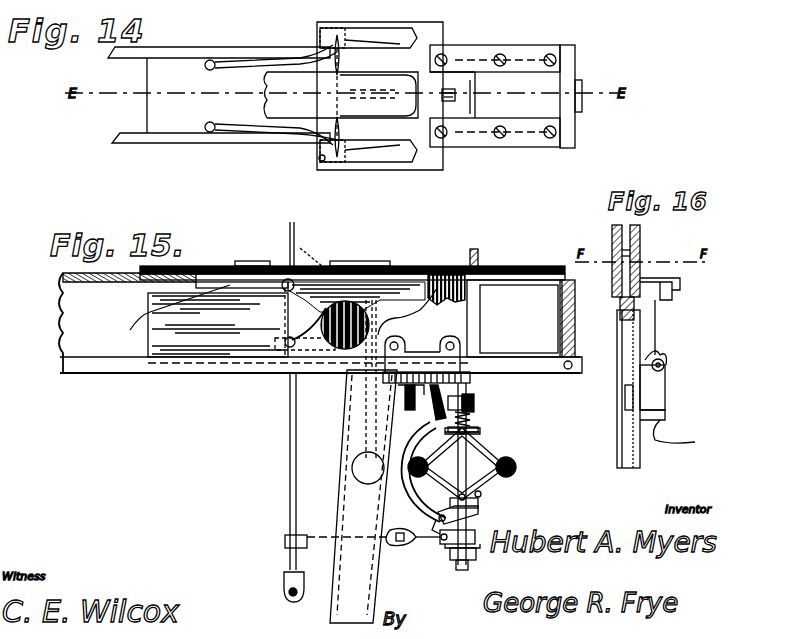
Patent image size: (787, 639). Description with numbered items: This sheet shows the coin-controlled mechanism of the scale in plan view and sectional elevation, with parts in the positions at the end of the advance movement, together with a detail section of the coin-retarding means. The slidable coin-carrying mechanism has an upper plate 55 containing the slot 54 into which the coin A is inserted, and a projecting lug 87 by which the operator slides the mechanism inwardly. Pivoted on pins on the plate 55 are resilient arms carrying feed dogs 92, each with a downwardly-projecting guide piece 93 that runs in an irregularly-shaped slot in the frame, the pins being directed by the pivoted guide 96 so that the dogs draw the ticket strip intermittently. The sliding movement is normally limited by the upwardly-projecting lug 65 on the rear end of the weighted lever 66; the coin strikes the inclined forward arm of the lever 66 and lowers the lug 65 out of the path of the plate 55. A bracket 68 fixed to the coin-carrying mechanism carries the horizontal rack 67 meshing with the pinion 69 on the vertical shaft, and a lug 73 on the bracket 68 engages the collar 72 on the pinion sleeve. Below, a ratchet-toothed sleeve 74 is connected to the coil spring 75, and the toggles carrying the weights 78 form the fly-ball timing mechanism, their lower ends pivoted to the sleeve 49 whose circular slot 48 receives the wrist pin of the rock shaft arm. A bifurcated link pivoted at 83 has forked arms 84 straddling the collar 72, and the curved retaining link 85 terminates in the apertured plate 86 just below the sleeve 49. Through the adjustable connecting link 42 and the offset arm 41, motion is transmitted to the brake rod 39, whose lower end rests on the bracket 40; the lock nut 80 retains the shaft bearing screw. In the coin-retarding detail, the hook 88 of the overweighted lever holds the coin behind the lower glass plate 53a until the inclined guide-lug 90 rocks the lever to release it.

In FIG. 14, the feed dogs 92 is at (330, 45).
In FIG. 14, the guide piece 93 is at (345, 42).
In FIG. 14, the pivoted guide 96 is at (418, 40).
In FIG. 14, the upper plate 55 is at (540, 115).
In FIG. 15, the upper plate 55 is at (420, 266).
In FIG. 15, the slot 54 is at (365, 266).
In FIG. 15, the projecting lug 87 is at (478, 255).
In FIG. 15, the upwardly-projecting lug 65 is at (200, 287).
In FIG. 15, the lever 66 is at (202, 310).
In FIG. 15, the horizontal rack 67 is at (410, 362).
In FIG. 15, the bracket 68 is at (455, 350).
In FIG. 15, the pinion 69 is at (472, 382).
In FIG. 15, the collar 72 is at (476, 392).
In FIG. 15, the lug 73 is at (475, 405).
In FIG. 15, the sleeve 74 is at (474, 416).
In FIG. 15, the coil spring 75 is at (482, 430).
In FIG. 15, the weights 78 is at (510, 470).
In FIG. 15, the sleeve 49 is at (482, 496).
In FIG. 15, the circular slot 48 is at (480, 512).
In FIG. 15, the pivot 83 is at (420, 402).
In FIG. 15, the forked arms 84 is at (357, 461).
In FIG. 15, the curved retaining link 85 is at (405, 435).
In FIG. 15, the apertured plate 86 is at (438, 540).
In FIG. 15, the adjustable connecting link 42 is at (400, 545).
In FIG. 15, the brake rod 39 is at (289, 445).
In FIG. 15, the offset arm or eccentric 41 is at (285, 541).
In FIG. 15, the bracket 40 is at (283, 592).
In FIG. 16, the lower glass plate 53a is at (640, 455).
In FIG. 16, the inclined guide-lug 90 is at (675, 284).
In FIG. 16, the lock nut 80 is at (666, 383).
In FIG. 16, the coin A is at (625, 400).
In FIG. 16, the hook 88 is at (676, 431).